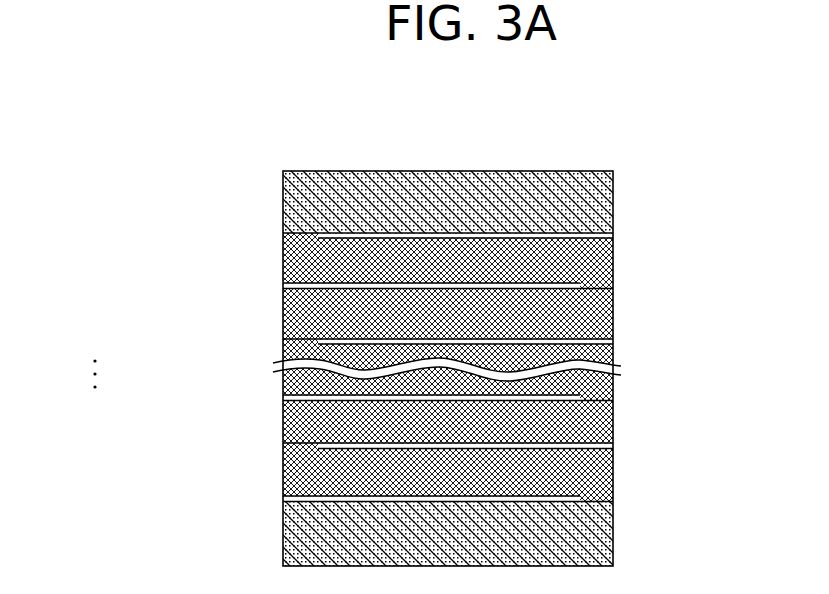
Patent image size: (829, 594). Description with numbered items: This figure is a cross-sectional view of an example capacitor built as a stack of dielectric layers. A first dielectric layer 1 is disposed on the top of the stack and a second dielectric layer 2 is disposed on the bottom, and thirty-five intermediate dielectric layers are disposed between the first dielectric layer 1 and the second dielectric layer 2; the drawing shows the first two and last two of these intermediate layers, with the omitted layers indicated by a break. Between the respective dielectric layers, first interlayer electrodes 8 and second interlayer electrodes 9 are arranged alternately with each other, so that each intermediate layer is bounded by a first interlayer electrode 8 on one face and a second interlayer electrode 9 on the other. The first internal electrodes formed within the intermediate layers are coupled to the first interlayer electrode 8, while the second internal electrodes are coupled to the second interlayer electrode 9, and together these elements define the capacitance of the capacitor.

The first dielectric layer 1 is at (333, 210).
The second dielectric layer 2 is at (340, 532).
The first interlayer electrode 8 is at (614, 240).
The second interlayer electrode 9 is at (614, 291).